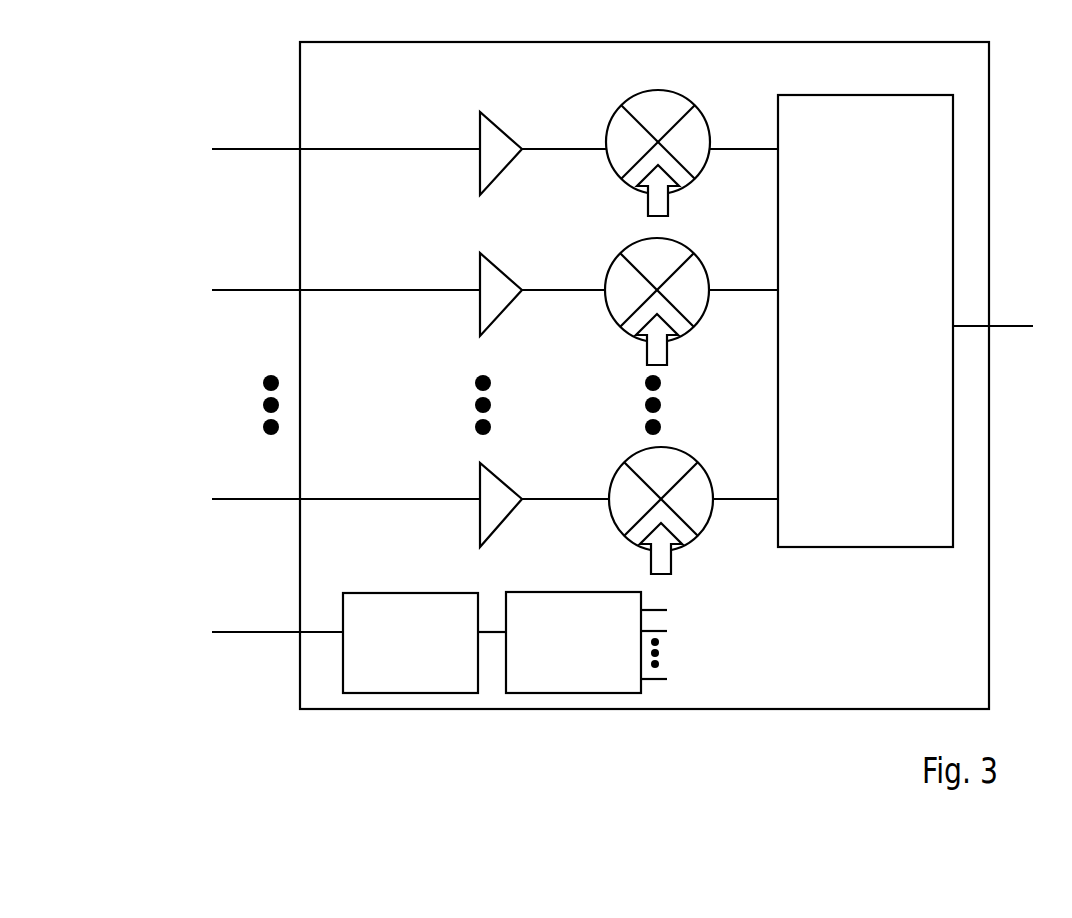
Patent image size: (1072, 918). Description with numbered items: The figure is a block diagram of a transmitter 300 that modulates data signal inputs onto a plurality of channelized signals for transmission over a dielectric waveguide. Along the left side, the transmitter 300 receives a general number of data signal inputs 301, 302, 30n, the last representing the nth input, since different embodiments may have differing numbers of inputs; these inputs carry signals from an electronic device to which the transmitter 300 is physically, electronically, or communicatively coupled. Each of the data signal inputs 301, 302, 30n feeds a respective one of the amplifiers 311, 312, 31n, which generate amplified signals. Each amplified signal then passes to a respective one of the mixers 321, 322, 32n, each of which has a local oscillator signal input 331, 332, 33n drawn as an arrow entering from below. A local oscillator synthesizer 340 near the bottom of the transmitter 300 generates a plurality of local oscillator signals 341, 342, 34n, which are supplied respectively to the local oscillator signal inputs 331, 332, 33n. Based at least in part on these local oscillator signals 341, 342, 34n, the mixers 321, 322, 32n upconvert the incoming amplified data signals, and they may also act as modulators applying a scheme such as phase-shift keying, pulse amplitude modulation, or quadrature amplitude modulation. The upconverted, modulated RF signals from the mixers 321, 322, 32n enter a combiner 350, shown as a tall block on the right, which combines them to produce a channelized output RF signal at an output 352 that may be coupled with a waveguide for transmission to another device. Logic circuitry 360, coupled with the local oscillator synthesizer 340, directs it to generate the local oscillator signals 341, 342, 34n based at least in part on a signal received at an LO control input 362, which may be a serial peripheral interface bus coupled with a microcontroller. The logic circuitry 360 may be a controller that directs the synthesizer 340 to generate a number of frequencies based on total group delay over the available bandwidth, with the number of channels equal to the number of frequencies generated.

The transmitter 300 is at (581, 718).
The data signal input 301 is at (243, 149).
The data signal input 302 is at (243, 290).
The data signal input 30n is at (244, 499).
The amplifier 311 is at (503, 127).
The amplifier 312 is at (506, 268).
The amplifier 31n is at (508, 482).
The mixer 321 is at (690, 95).
The mixer 322 is at (674, 240).
The mixer 32n is at (668, 448).
The local oscillator signal input 331 is at (648, 188).
The local oscillator signal input 332 is at (647, 355).
The local oscillator signal input 33n is at (651, 556).
The local oscillator synthesizer 340 is at (582, 642).
The local oscillator signal 341 is at (666, 610).
The local oscillator signal 342 is at (666, 631).
The local oscillator signal 34n is at (666, 679).
The combiner 350 is at (865, 321).
The output 352 is at (1008, 326).
The logic circuitry 360 is at (424, 643).
The LO control input 362 is at (230, 632).